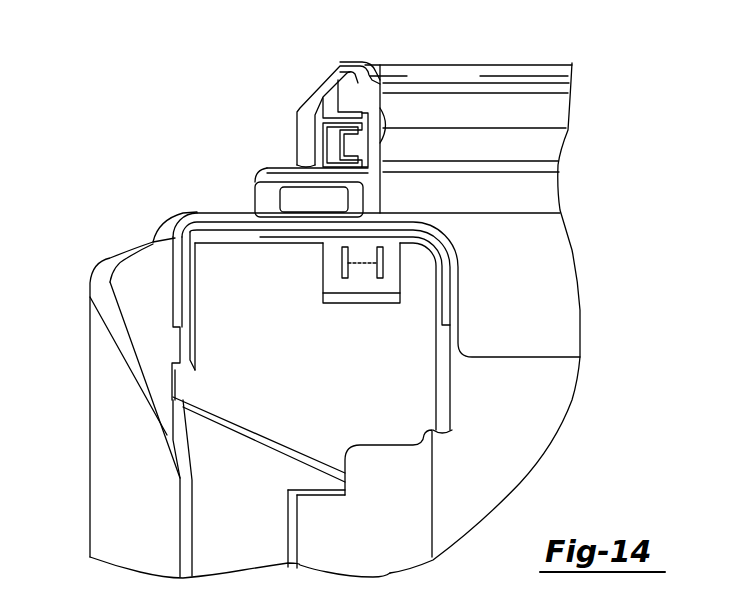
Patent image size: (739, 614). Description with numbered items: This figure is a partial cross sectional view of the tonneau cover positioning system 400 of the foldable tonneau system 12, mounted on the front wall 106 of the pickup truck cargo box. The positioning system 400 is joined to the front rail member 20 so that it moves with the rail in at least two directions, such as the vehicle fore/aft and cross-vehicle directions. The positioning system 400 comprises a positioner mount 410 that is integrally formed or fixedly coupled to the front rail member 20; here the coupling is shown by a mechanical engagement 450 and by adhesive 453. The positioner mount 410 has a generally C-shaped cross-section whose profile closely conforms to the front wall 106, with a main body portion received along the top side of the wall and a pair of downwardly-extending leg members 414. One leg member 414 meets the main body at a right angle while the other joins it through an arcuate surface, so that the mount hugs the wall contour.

The foldable tonneau system 12 is at (598, 156).
The front rail member 20 is at (338, 68).
The mechanical engagement 450 is at (374, 51).
The adhesive 453 is at (262, 198).
The positioner mount 410 is at (458, 265).
The leg members 414 is at (173, 285).
The front wall 106 is at (243, 510).
The tonneau cover positioning system 400 is at (126, 173).